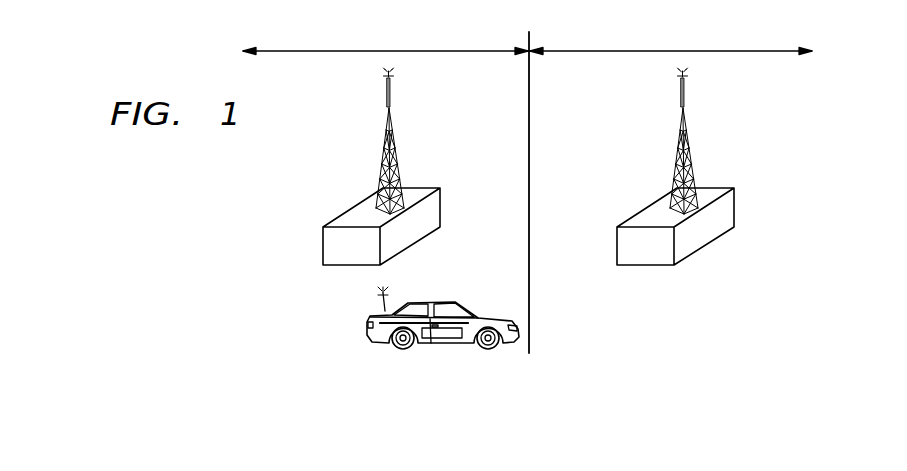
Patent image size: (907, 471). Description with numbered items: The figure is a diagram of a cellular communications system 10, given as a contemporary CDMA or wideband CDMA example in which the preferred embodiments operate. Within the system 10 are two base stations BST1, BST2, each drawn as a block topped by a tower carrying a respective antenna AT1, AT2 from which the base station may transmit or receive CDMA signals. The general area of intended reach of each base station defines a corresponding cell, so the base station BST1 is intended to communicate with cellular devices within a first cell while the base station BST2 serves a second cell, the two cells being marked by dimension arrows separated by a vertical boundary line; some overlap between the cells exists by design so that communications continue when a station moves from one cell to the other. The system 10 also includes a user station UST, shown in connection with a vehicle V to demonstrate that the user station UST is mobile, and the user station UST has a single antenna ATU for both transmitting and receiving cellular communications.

The cellular communications system 10 is at (798, 138).
The antenna AT1 is at (391, 93).
The antenna AT2 is at (686, 93).
The base station BST1 is at (381, 186).
The base station BST2 is at (675, 186).
The antenna ATU is at (380, 296).
The vehicle V is at (493, 322).
The user station UST is at (452, 338).